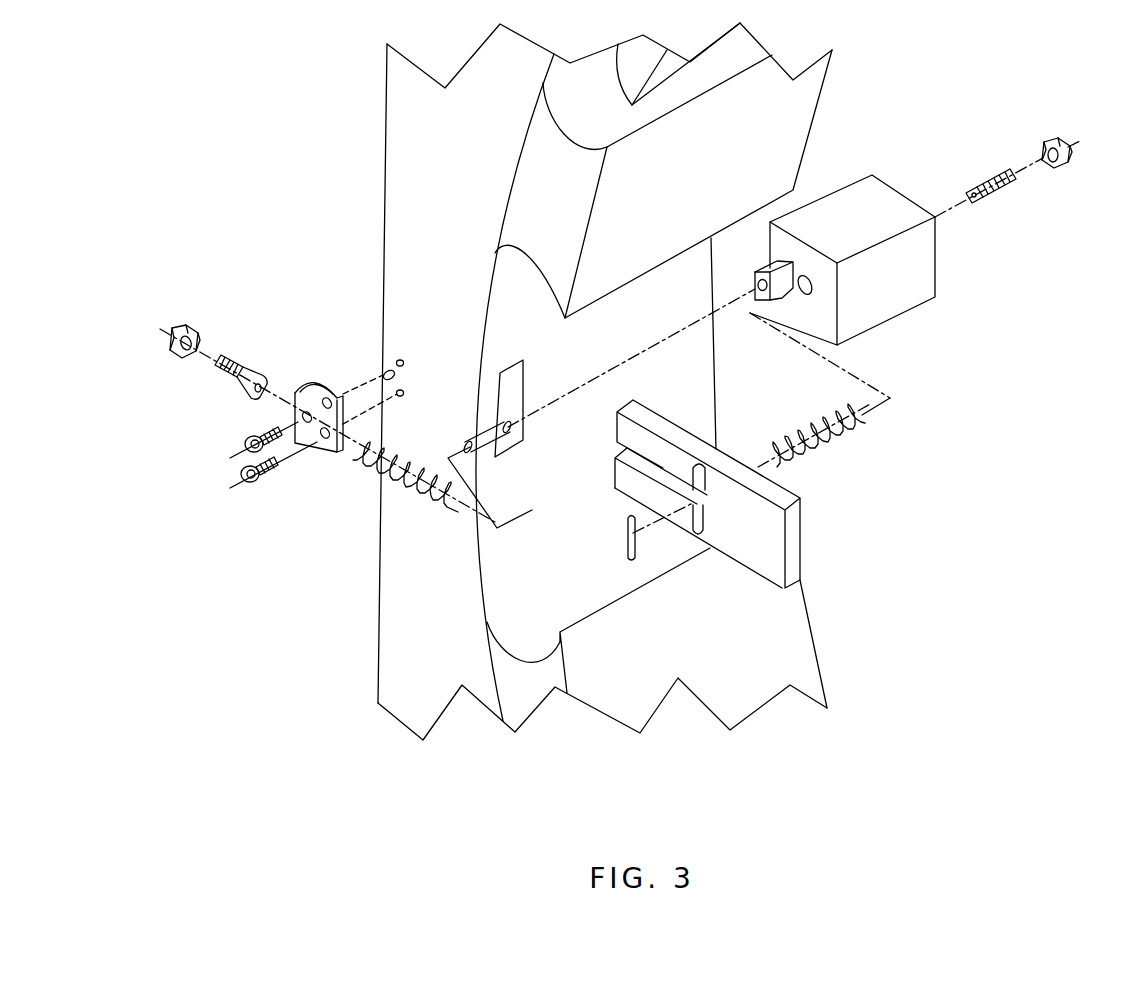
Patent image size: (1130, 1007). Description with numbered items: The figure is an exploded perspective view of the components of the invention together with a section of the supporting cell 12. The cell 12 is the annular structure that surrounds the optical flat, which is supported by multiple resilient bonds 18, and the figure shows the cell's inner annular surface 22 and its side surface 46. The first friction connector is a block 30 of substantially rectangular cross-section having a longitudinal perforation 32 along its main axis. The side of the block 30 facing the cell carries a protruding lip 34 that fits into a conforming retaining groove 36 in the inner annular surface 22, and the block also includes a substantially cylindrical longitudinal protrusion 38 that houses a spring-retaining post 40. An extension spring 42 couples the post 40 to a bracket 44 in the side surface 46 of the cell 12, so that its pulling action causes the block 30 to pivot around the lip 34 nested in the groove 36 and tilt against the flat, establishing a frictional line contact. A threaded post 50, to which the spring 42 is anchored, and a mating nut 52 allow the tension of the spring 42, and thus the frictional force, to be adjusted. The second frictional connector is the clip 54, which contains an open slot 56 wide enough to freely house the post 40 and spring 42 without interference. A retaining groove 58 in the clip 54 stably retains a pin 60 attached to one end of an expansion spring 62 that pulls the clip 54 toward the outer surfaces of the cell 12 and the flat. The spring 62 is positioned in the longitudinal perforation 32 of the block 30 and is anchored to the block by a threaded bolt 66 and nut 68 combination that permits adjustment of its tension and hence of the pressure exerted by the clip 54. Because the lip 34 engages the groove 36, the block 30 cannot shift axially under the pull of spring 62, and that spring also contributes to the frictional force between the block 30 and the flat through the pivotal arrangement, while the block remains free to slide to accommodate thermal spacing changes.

The cell 12 is at (387, 135).
The resilient bonds 18 is at (795, 107).
The inner annular surface 22 is at (500, 568).
The block 30 is at (912, 182).
The longitudinal perforation 32 is at (804, 296).
The protruding lip 34 is at (780, 217).
The retaining groove 36 is at (505, 378).
The cylindrical longitudinal protrusion 38 is at (763, 270).
The spring-retaining post 40 is at (497, 438).
The extension spring 42 is at (412, 460).
The bracket 44 is at (323, 388).
The side surface 46 is at (490, 203).
The threaded post 50 is at (240, 362).
The nut 52 is at (175, 325).
The clip 54 is at (807, 535).
The open slot 56 is at (617, 455).
The retaining groove 58 is at (700, 517).
The pin 60 is at (637, 543).
The expansion spring 62 is at (800, 423).
The threaded bolt 66 is at (992, 190).
The nut 68 is at (1058, 162).